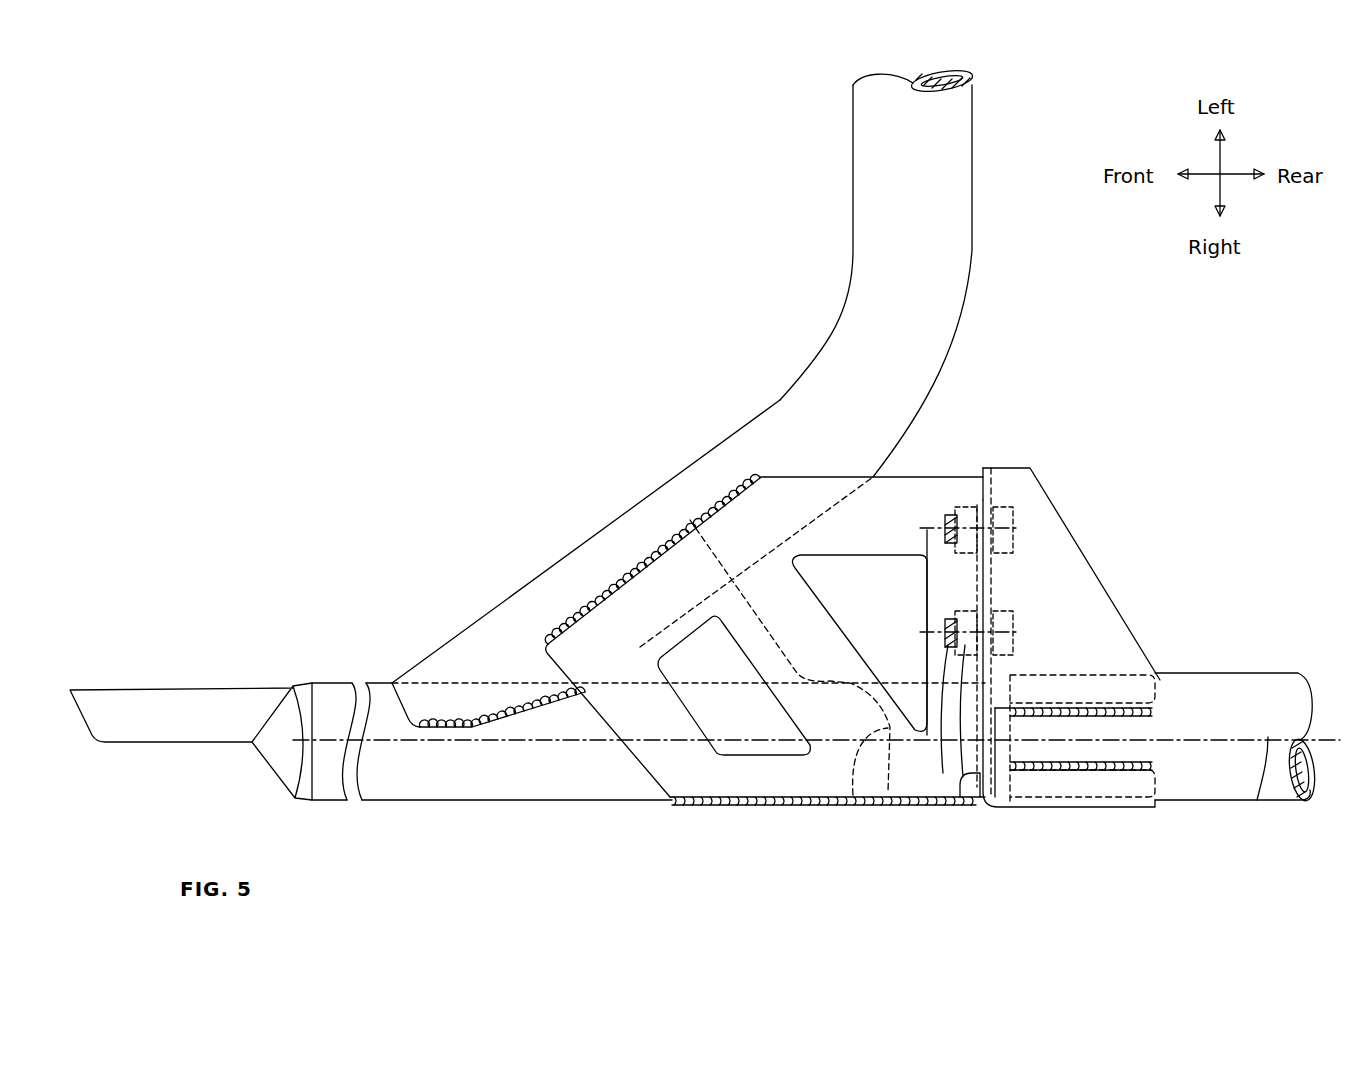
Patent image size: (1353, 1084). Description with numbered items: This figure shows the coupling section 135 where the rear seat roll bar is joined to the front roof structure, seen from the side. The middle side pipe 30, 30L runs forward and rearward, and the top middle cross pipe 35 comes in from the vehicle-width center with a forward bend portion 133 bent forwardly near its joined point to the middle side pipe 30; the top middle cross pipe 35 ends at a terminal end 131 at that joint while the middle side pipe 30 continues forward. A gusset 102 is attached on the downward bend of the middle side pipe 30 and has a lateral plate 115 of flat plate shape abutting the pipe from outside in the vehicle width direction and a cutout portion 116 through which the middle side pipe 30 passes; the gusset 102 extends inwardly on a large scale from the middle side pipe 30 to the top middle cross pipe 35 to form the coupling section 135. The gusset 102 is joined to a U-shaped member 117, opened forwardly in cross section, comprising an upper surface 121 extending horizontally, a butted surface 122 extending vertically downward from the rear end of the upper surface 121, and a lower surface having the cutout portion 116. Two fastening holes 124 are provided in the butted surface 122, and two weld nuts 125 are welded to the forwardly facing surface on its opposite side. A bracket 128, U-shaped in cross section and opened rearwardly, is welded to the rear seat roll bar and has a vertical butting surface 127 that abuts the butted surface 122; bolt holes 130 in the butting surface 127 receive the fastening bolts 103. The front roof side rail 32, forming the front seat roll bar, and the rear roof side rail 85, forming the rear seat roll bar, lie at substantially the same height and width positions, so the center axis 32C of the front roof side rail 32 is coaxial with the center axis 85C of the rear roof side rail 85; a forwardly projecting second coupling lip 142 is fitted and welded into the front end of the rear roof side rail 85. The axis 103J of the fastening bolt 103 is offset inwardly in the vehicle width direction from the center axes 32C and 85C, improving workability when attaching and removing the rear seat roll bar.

The top middle cross pipe 35 is at (868, 175).
The upper surface 121 is at (903, 497).
The forward bend portion 133 is at (637, 530).
The second coupling lip 142 is at (203, 702).
The terminal end 131 is at (440, 735).
The middle side pipe 30 is at (816, 778).
The left frame member 30L is at (642, 790).
The front roof side rail 32 is at (503, 770).
The center axis 32C is at (548, 742).
The U-shaped member 117 is at (622, 756).
The gusset 102 is at (760, 806).
The lateral plate 115 is at (806, 805).
The cutout portion 116 is at (870, 800).
The weld nuts 125 is at (965, 515).
The fastening holes 124 is at (960, 520).
The butting surface 127 is at (978, 495).
The butted surface 122 is at (987, 580).
The coupling section 135 is at (990, 562).
The fastening bolt 103 is at (1008, 522).
The bolt holes 130 is at (997, 512).
The bracket 128 is at (1076, 810).
The rear roof side rail 85 is at (1205, 763).
The center axis 85C is at (1258, 812).
The axis 103J is at (936, 631).